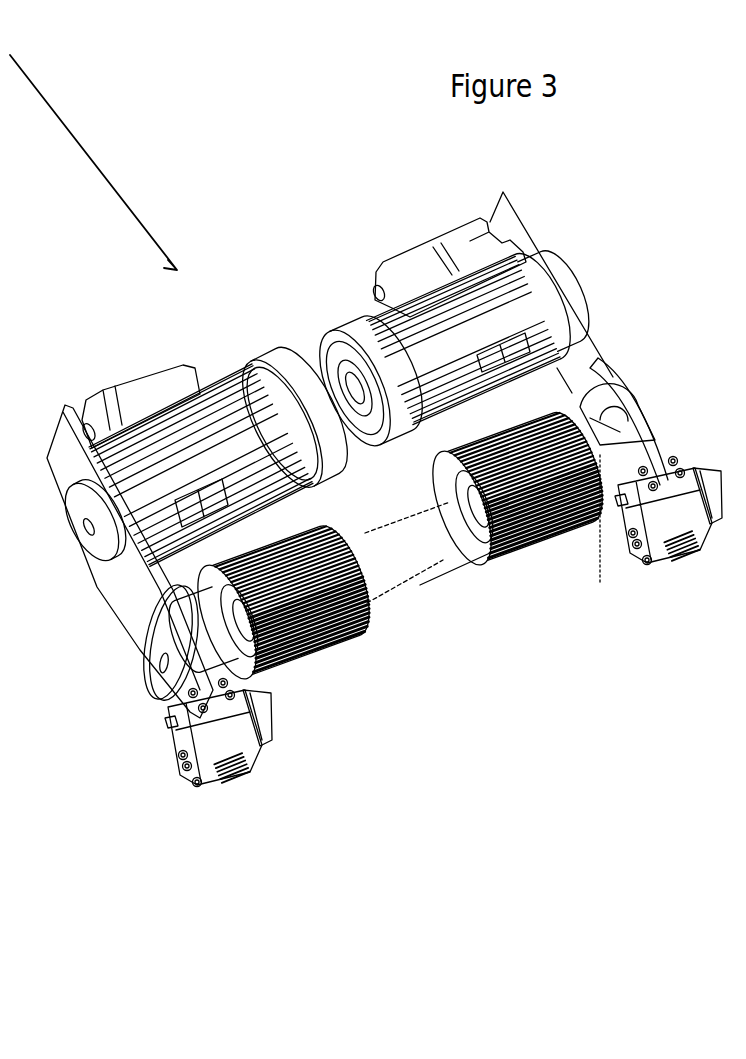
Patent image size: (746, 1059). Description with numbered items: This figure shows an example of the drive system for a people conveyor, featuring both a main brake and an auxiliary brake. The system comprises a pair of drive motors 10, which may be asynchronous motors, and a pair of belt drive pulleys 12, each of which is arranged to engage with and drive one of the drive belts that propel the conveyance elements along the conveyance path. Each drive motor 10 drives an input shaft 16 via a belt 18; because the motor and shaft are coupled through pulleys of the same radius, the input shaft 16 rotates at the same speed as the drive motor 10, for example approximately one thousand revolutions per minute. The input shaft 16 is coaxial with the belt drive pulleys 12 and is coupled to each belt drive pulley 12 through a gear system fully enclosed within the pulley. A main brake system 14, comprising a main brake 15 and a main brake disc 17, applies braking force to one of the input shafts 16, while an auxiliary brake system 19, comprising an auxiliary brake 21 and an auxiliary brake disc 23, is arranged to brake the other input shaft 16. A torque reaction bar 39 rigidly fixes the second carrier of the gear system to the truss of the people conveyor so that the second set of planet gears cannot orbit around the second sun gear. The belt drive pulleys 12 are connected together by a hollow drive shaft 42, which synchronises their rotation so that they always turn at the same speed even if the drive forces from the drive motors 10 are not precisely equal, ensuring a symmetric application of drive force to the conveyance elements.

The drive motor 10 is at (463, 290).
The belt drive pulley 12 is at (548, 560).
The main brake system 14 is at (136, 743).
The main brake 15 is at (233, 723).
The input shaft 16 is at (163, 660).
The main brake disc 17 is at (193, 647).
The belt 18 is at (133, 577).
The auxiliary brake system 19 is at (709, 421).
The auxiliary brake 21 is at (678, 518).
The auxiliary brake disc 23 is at (652, 457).
The torque reaction bar 39 is at (313, 667).
The hollow drive shaft 42 is at (435, 548).